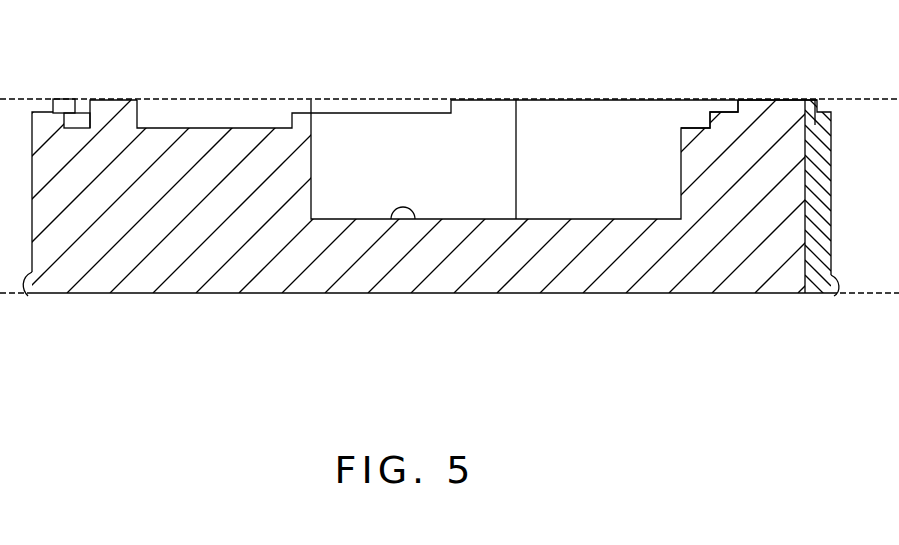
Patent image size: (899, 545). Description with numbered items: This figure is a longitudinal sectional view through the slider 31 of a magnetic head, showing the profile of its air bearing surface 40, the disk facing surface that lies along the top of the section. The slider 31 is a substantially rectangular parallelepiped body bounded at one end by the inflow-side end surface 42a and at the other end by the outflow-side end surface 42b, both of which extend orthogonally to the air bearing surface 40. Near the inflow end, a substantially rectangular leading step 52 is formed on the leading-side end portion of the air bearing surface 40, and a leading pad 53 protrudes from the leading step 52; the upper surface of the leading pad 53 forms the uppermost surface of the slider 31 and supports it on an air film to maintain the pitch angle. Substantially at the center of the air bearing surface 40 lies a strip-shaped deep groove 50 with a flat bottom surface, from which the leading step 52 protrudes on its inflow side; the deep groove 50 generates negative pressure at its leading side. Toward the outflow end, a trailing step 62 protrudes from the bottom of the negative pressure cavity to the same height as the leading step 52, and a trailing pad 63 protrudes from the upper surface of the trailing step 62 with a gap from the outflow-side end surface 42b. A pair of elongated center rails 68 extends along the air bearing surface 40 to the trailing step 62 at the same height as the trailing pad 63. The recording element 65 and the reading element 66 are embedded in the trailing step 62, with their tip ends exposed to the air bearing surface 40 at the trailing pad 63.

The slider 31 is at (192, 280).
The air bearing surface 40 is at (677, 96).
The inflow-side end surface 42a is at (28, 296).
The outflow-side end surface 42b is at (834, 296).
The deep groove 50 is at (392, 224).
The leading step 52 is at (43, 118).
The leading pad 53 is at (233, 99).
The trailing step 62 is at (721, 118).
The trailing pad 63 is at (765, 100).
The recording element 65 is at (812, 108).
The reading element 66 is at (812, 108).
The center rail 68 is at (546, 100).